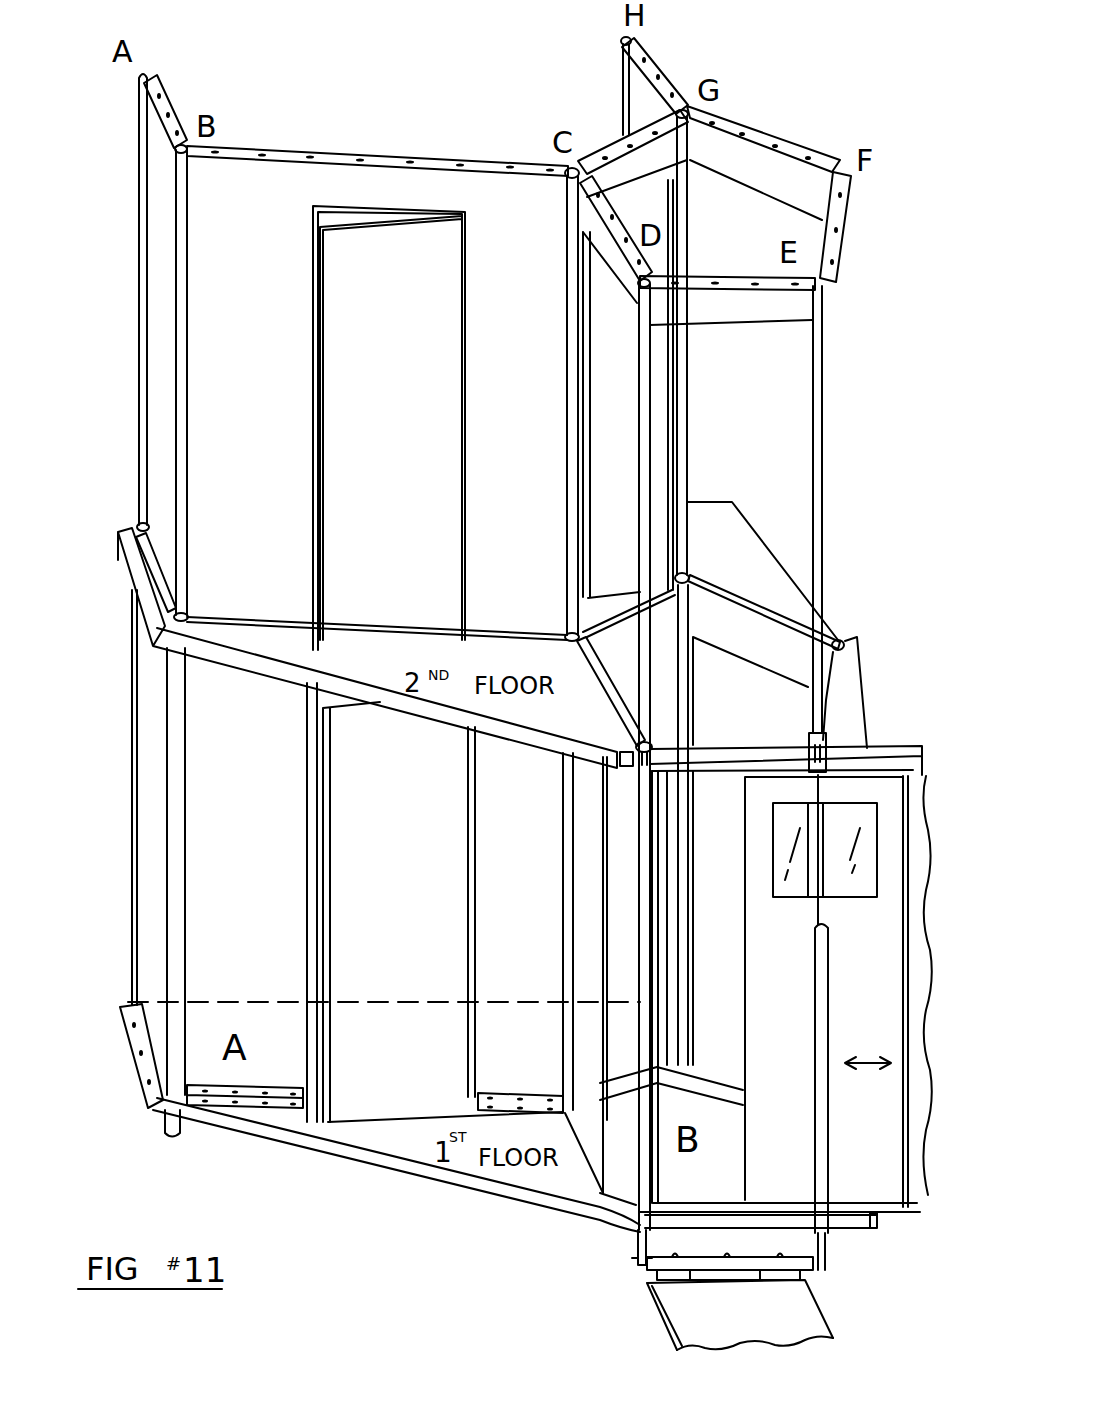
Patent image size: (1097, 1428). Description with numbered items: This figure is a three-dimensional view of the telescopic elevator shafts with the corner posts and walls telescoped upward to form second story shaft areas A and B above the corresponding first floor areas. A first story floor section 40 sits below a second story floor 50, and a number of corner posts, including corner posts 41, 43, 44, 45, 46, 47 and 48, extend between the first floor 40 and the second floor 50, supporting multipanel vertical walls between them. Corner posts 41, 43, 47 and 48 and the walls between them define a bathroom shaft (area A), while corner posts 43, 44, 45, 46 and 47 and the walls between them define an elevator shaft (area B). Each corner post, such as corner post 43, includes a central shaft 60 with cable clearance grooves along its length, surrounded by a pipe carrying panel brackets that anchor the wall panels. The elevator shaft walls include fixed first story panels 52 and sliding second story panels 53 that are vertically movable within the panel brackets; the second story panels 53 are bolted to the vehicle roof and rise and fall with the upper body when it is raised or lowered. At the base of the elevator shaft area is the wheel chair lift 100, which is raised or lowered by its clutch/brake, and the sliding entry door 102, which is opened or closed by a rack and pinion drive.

The first story floor section 40 is at (396, 1170).
The corner post 41 is at (131, 699).
The corner post 43 is at (690, 720).
The corner post 44 is at (844, 641).
The corner post 45 is at (827, 738).
The corner post 46 is at (652, 1192).
The corner post 47 is at (560, 935).
The corner post 48 is at (186, 782).
The second story floor 50 is at (862, 692).
The first story panel 52 is at (145, 870).
The second story panel 53 is at (720, 325).
The central shaft 60 is at (641, 545).
The wheel chair lift 100 is at (658, 1318).
The sliding entry door 102 is at (750, 1103).